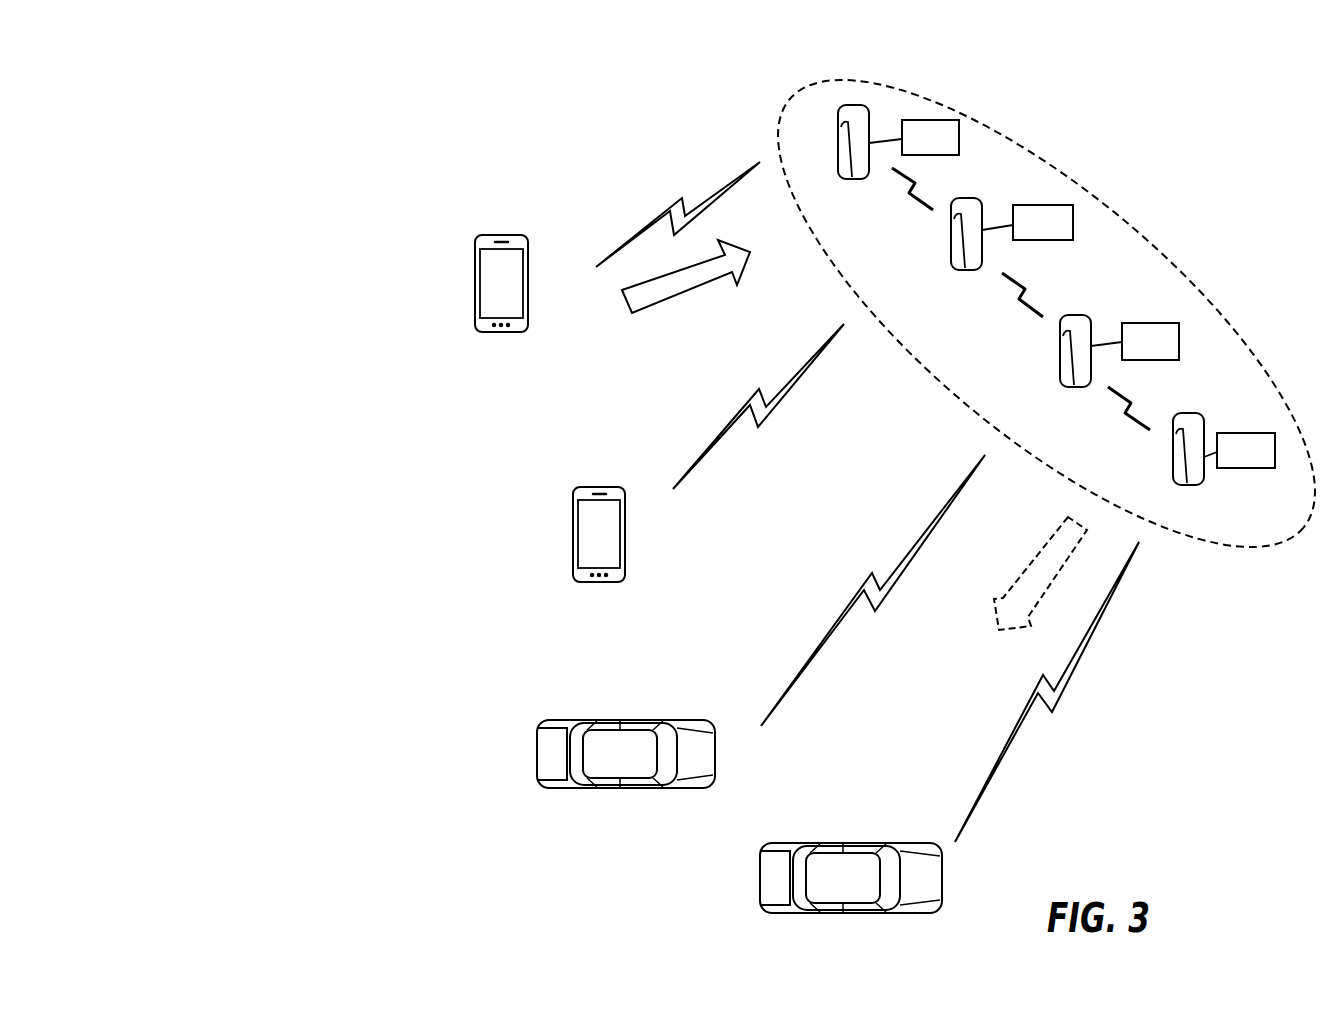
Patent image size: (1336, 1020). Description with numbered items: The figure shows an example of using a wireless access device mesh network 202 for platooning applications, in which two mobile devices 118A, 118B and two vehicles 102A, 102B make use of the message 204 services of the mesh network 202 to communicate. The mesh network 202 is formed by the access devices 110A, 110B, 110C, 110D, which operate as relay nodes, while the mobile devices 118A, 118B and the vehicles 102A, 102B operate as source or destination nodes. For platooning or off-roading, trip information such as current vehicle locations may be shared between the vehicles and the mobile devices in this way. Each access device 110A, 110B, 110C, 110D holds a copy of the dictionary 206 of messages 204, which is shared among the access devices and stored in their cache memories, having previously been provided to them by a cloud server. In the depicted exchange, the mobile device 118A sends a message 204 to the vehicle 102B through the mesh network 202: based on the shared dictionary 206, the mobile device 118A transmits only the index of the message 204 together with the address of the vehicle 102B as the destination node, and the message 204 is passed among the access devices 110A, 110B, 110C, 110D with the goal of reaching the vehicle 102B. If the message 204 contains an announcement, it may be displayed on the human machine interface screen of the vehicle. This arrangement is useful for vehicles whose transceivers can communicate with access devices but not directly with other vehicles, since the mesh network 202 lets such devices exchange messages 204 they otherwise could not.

The wireless access device mesh network 202 is at (977, 372).
The access device 110A is at (878, 207).
The access device 110B is at (988, 300).
The access device 110C is at (1098, 419).
The access device 110D is at (1212, 510).
The dictionary 206 is at (945, 149).
The mobile device 118A is at (524, 362).
The mobile device 118B is at (621, 614).
The vehicle 102A is at (643, 764).
The vehicle 102B is at (867, 887).
The message 204 is at (615, 314).